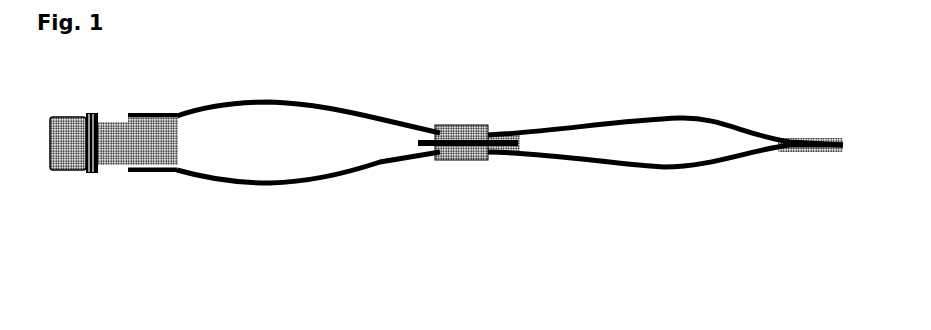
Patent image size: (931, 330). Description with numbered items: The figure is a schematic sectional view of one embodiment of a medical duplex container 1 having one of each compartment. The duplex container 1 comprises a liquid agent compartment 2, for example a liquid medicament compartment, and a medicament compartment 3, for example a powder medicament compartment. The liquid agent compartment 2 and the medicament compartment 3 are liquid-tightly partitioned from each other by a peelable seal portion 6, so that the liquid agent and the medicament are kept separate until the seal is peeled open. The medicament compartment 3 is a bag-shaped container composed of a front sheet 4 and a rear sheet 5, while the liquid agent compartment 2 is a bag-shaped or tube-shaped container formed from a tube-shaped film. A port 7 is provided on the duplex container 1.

The optical fiber cable assembly 1 is at (446, 177).
The optical fiber cable loop portion 2 is at (271, 167).
The optical fiber loop 3 is at (665, 150).
The optical fiber 4 is at (740, 132).
The optical fiber 5 is at (602, 163).
The splice / fixing member 6 is at (471, 158).
The optical connector 7 is at (87, 180).